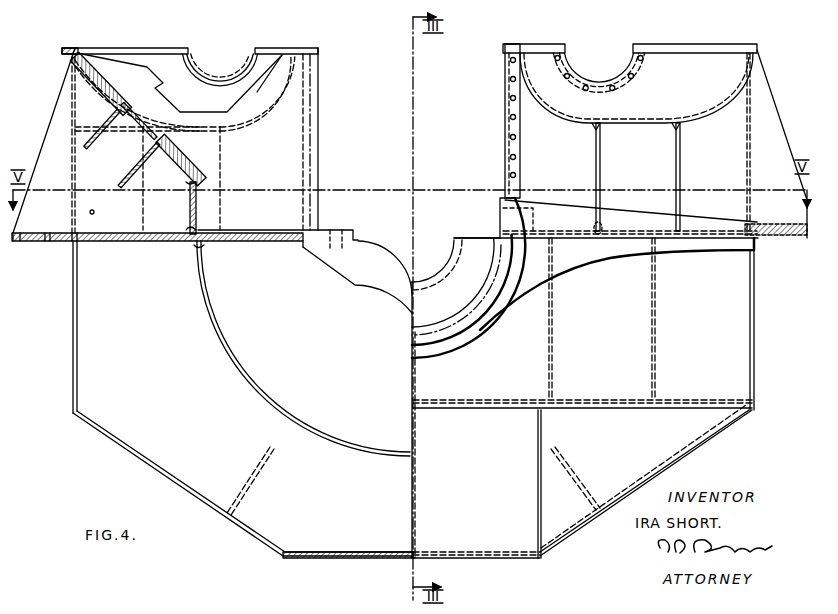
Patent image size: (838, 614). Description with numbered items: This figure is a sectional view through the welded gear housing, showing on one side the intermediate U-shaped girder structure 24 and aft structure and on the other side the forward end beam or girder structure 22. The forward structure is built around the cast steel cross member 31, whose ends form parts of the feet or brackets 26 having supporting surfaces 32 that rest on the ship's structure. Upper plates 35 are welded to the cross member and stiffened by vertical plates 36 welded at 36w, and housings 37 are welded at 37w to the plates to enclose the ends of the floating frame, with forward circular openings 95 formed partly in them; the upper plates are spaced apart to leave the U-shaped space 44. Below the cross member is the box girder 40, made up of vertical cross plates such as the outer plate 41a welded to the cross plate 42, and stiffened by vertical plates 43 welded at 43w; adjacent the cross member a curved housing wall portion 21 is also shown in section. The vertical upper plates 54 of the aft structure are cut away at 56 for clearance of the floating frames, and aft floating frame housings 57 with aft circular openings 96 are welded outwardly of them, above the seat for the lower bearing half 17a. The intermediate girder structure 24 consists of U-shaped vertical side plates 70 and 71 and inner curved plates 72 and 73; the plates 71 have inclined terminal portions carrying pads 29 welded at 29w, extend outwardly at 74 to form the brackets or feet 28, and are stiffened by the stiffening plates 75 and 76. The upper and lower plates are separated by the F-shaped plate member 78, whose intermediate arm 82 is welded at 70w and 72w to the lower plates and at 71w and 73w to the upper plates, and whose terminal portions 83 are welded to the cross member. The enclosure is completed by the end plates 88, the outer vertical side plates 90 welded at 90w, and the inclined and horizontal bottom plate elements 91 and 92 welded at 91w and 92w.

The lower half of the bearing 17a is at (367, 278).
The housing cylinder wall 21 is at (478, 310).
The forward end beam or girder structure 22 is at (711, 274).
The intermediate U-shaped girder structure 24 is at (131, 276).
The feet or brackets 26 is at (788, 268).
The brackets or feet 28 is at (43, 243).
The pads 29 is at (117, 92).
The weld 29w is at (188, 182).
The cross member 31 is at (600, 257).
The supporting surfaces 32 is at (762, 251).
The upper plates 35 is at (725, 122).
The vertical plates 36 is at (677, 154).
The weld 36w is at (681, 129).
The housings 37 is at (697, 63).
The weld 37w is at (580, 125).
The box girder 40 is at (686, 360).
The outer vertical cross plate 41a is at (735, 346).
The cross plate 42 is at (672, 400).
The vertical plates 43 is at (650, 347).
The weld 43w is at (650, 400).
The U-shaped space 44 is at (428, 140).
The vertical upper plates 54 is at (280, 130).
The cut away 56 is at (182, 109).
The aft floating frame housings 57 is at (275, 53).
The U-shaped vertical side plate 70 is at (205, 333).
The weld 70w is at (130, 243).
The vertical plate 71 is at (93, 214).
The weld 71w is at (90, 242).
The inner curved plate 72 is at (248, 378).
The weld 72w is at (202, 247).
The inner curved plate 73 is at (197, 214).
The weld 73w is at (190, 231).
The outwardly extending plate portion 74 is at (47, 145).
The stiffening plate 75 is at (140, 141).
The stiffening plate 76 is at (132, 172).
The F-shaped plate member 78 is at (40, 233).
The intermediate arm 82 is at (110, 233).
The terminal portions 83 is at (797, 237).
The end plates 88 is at (637, 453).
The outer vertical side plates 90 is at (77, 366).
The weld 90w is at (70, 243).
The inclined bottom plate elements 91 is at (147, 464).
The weld 91w is at (188, 486).
The horizontal bottom plate element 92 is at (342, 560).
The weld 92w is at (287, 553).
The forward circular openings 95 is at (612, 62).
The aft circular openings 96 is at (192, 62).